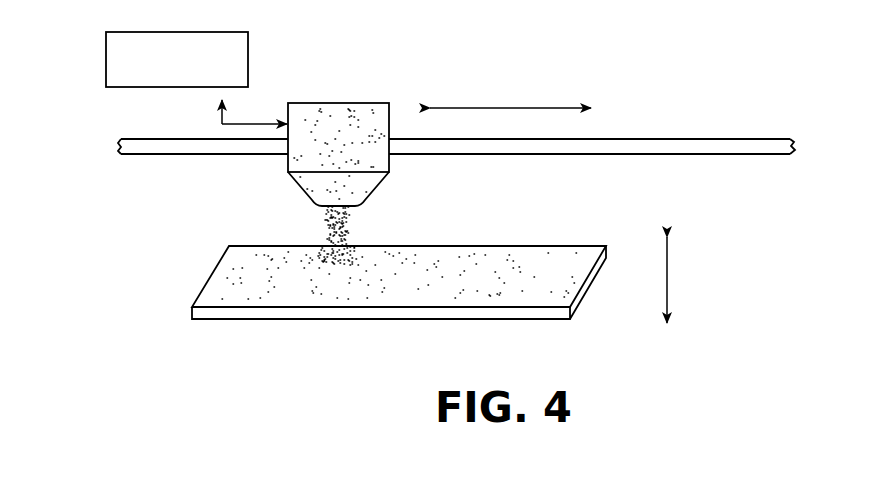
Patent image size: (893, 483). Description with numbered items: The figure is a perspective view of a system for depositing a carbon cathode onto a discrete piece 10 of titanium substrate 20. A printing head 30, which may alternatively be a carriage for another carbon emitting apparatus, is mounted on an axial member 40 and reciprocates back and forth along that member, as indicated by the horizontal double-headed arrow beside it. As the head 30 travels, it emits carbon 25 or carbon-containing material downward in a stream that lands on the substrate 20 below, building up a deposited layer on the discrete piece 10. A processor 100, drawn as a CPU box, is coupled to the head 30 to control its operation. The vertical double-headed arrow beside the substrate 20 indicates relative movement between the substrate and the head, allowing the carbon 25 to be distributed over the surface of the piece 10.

The processor 100 is at (185, 32).
The printing head 30 is at (105, 78).
The axial member 40 is at (674, 137).
The carbon 25 is at (361, 224).
The titanium substrate 20 is at (370, 320).
The discrete piece 10 is at (565, 280).